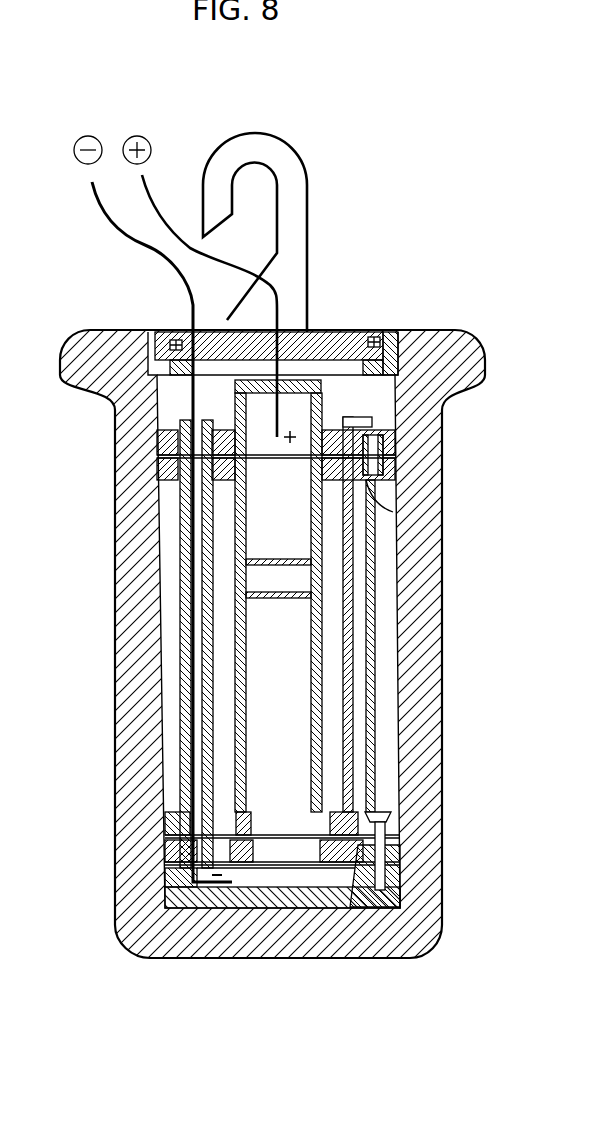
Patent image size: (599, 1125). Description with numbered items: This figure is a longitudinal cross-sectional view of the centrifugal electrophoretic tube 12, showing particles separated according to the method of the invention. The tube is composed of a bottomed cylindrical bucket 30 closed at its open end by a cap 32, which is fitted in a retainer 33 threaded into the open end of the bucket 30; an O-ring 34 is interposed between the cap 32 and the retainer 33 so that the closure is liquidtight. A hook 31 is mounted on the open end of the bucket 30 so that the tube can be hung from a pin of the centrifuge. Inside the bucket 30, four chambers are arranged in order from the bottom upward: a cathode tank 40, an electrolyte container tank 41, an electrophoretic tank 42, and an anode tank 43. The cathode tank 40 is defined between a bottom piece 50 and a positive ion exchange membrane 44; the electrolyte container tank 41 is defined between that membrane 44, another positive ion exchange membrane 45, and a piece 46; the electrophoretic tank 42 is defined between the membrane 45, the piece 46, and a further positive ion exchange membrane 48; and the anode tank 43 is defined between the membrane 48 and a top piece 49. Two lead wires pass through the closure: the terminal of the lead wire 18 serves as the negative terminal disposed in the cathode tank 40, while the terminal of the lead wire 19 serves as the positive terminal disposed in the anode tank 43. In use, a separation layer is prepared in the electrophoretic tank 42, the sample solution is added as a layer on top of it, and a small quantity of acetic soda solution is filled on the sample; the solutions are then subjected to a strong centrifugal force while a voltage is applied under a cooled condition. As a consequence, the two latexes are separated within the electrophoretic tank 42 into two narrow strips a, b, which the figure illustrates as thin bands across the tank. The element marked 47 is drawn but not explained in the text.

The centrifugal electrophoretic tube 12 is at (276, 639).
The lead wire 18 is at (118, 214).
The lead wire 19 is at (150, 190).
The bottomed cylindrical bucket 30 is at (430, 503).
The hook 31 is at (297, 200).
The cap 32 is at (357, 332).
The retainer 33 is at (385, 332).
The O-ring 34 is at (175, 332).
The cathode tank 40 is at (283, 878).
The electrolyte container tank 41 is at (305, 842).
The electrophoretic tank 42 is at (300, 675).
The anode tank 43 is at (300, 407).
The positive ion exchange membrane 44 is at (253, 880).
The positive ion exchange membrane 45 is at (245, 882).
The piece 46 is at (343, 845).
The outer tube 47 is at (320, 627).
The positive ion exchange membrane 48 is at (247, 488).
The top piece 49 is at (315, 358).
The bottom piece 50 is at (350, 896).
The narrow strip a is at (262, 553).
The narrow strip b is at (265, 602).